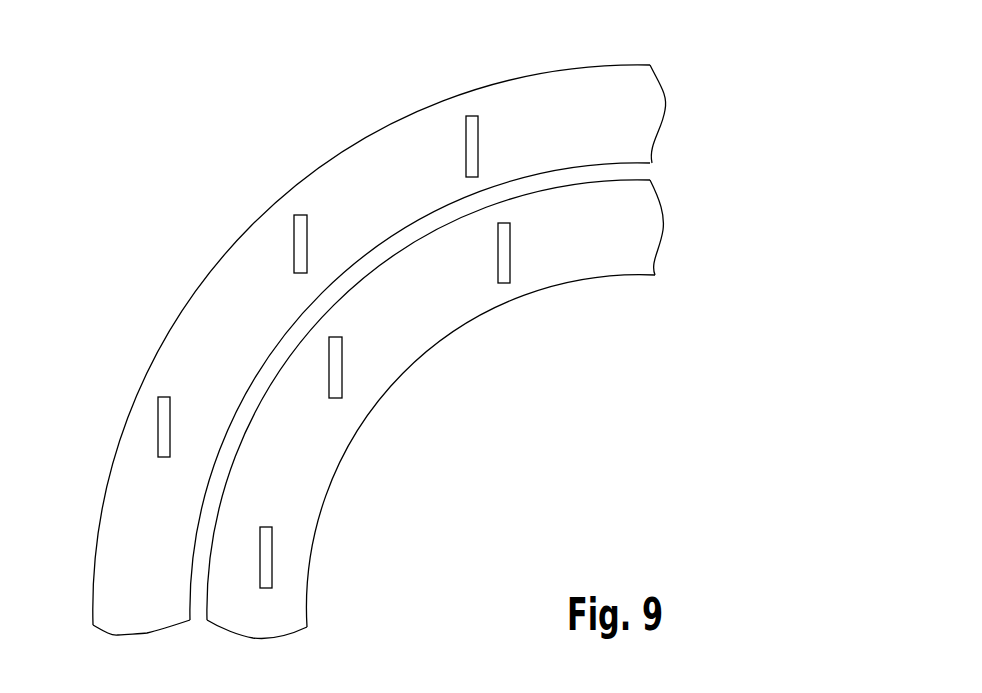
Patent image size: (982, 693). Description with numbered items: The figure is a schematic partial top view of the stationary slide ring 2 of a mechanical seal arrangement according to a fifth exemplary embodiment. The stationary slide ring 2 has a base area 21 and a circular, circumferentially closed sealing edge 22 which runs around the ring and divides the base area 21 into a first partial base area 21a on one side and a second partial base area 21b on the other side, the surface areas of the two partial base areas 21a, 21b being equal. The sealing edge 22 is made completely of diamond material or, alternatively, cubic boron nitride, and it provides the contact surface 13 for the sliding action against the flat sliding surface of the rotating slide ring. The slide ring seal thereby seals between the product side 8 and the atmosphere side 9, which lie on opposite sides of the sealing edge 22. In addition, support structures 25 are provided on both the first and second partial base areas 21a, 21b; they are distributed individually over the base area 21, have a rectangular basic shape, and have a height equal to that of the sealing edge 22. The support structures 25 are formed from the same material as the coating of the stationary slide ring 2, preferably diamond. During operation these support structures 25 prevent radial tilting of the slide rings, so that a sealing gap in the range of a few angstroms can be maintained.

The stationary slide ring 2 is at (118, 237).
The product side 8 is at (195, 223).
The atmosphere side 9 is at (481, 481).
The contact surface 13 is at (622, 174).
The base area 21 is at (409, 319).
The first partial base area 21a is at (608, 256).
The second partial base area 21b is at (578, 92).
The sealing edge 22 is at (425, 226).
The support structures 25 is at (160, 433).